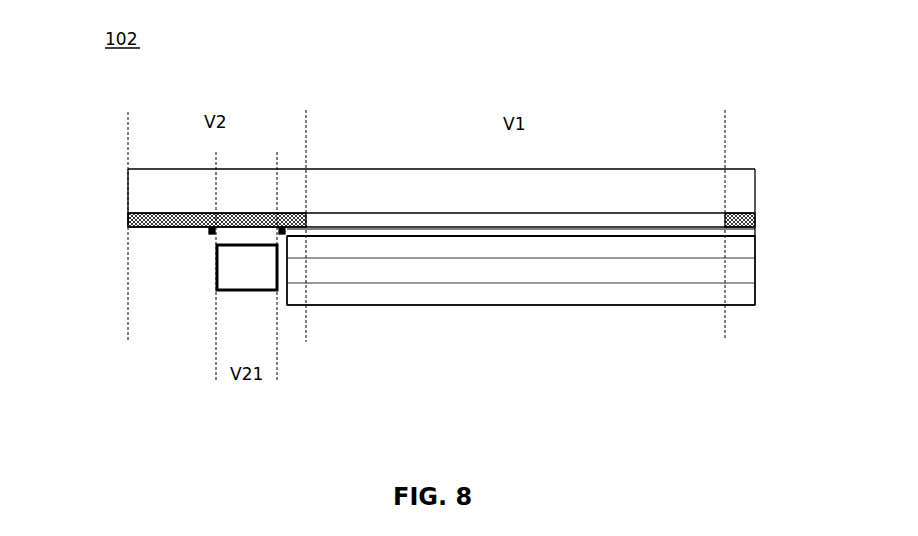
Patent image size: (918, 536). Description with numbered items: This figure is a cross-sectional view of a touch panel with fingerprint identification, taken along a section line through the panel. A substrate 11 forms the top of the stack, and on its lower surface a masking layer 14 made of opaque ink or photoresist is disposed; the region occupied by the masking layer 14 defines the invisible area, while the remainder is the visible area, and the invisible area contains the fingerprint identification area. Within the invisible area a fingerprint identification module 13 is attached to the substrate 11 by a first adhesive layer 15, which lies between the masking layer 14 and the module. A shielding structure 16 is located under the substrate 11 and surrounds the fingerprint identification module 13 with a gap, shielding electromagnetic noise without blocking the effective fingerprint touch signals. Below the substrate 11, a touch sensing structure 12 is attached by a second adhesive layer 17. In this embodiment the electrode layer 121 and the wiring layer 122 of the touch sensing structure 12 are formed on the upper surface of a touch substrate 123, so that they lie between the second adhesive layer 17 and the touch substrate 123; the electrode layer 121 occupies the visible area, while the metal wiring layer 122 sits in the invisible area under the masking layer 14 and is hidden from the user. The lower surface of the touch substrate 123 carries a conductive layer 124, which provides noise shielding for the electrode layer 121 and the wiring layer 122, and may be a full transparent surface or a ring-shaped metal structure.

The substrate 11 is at (665, 190).
The touch sensing structure 12 is at (521, 316).
The electrode layer 121 is at (436, 238).
The wiring layer 122 is at (324, 291).
The touch substrate 123 is at (495, 272).
The conductive layer 124 is at (600, 290).
The fingerprint identification module 13 is at (245, 288).
The masking layer 14 is at (145, 220).
The first adhesive layer 15 is at (247, 237).
The shielding structure 16 is at (210, 233).
The second adhesive layer 17 is at (685, 229).